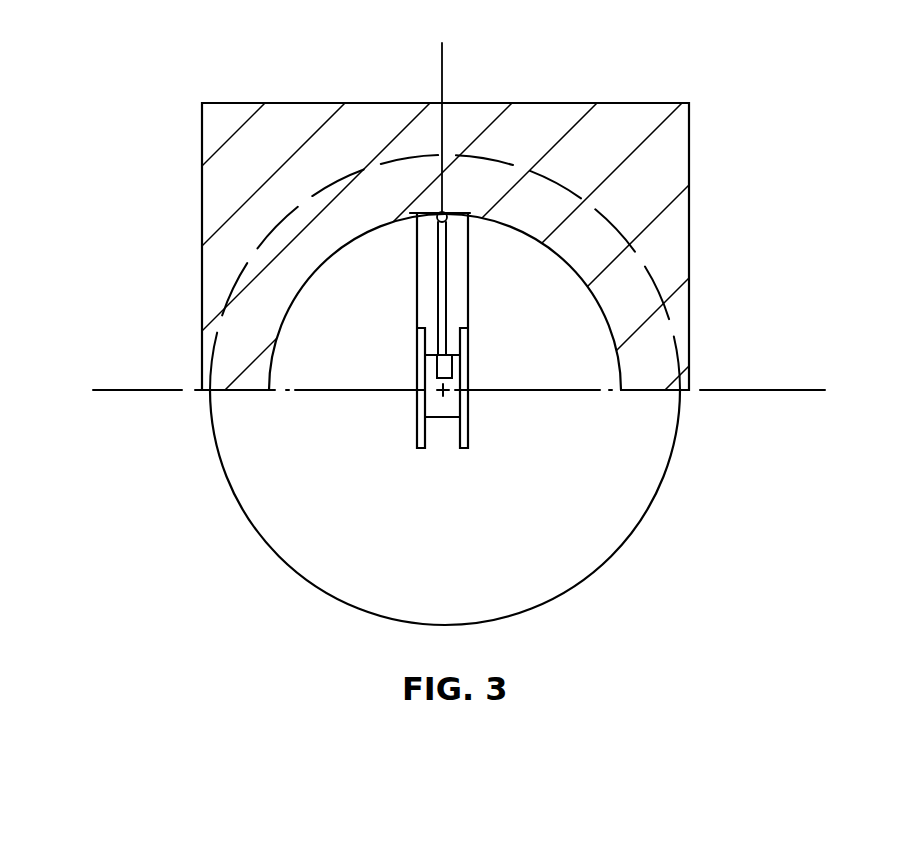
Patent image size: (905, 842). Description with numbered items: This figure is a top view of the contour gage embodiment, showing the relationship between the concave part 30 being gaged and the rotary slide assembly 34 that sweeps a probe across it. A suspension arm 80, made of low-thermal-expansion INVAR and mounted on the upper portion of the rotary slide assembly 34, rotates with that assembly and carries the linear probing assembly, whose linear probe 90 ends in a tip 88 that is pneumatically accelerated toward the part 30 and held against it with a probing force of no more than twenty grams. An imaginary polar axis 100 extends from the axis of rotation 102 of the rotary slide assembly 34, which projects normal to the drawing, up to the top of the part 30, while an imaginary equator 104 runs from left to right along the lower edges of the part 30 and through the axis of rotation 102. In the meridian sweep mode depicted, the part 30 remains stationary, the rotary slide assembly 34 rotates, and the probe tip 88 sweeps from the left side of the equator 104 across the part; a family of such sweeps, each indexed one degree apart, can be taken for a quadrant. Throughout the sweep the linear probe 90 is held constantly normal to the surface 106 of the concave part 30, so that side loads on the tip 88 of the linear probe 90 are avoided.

The part 30 is at (668, 190).
The rotary slide assembly 34 is at (718, 450).
The suspension arm 80 is at (458, 293).
The tip 88 is at (448, 222).
The linear probe 90 is at (440, 260).
The polar axis 100 is at (442, 70).
The axis of rotation 102 is at (418, 393).
The equator 104 is at (138, 388).
The surface 106 is at (605, 318).